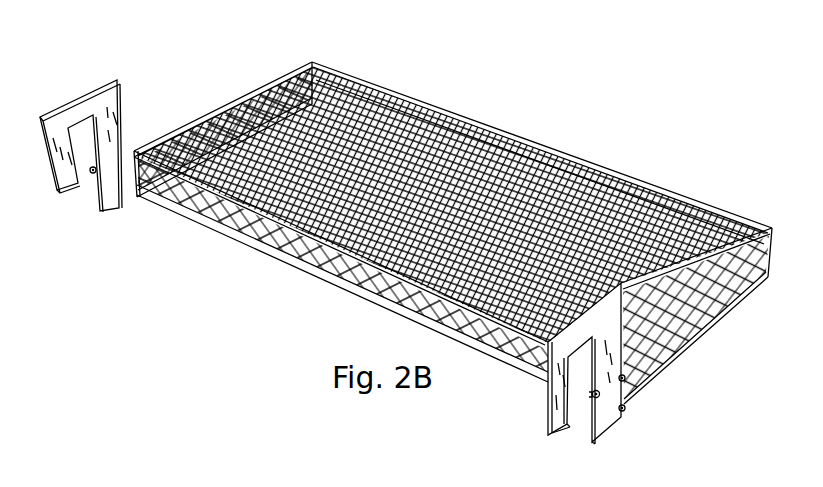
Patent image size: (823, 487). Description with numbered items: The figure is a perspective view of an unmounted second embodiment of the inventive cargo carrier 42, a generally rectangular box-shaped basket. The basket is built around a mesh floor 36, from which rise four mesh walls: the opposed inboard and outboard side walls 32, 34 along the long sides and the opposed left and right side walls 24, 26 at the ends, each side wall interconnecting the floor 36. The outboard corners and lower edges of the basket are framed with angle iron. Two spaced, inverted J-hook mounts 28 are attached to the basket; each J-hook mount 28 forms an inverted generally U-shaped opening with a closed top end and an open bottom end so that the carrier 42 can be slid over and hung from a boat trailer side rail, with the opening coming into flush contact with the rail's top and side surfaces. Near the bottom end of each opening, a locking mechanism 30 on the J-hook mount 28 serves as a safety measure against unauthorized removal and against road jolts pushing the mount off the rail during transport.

The left side wall 24 is at (688, 318).
The right side wall 26 is at (237, 95).
The J-hook mount 28 is at (63, 178).
The locking mechanism 30 is at (93, 173).
The inboard side wall 32 is at (256, 237).
The outboard side wall 34 is at (466, 114).
The floor 36 is at (388, 93).
The cargo carrier 42 is at (606, 117).